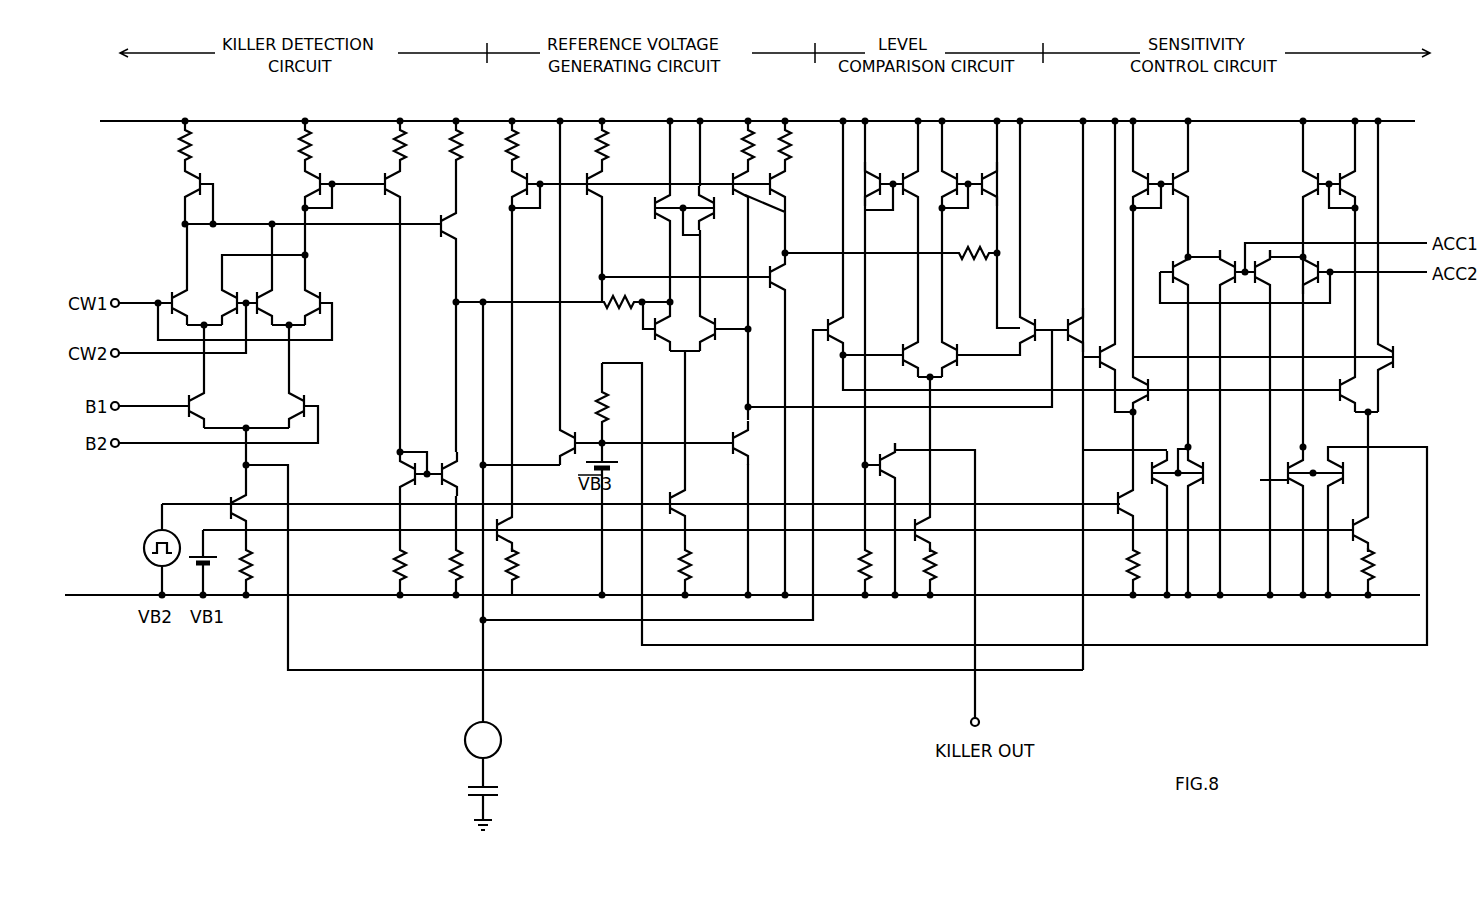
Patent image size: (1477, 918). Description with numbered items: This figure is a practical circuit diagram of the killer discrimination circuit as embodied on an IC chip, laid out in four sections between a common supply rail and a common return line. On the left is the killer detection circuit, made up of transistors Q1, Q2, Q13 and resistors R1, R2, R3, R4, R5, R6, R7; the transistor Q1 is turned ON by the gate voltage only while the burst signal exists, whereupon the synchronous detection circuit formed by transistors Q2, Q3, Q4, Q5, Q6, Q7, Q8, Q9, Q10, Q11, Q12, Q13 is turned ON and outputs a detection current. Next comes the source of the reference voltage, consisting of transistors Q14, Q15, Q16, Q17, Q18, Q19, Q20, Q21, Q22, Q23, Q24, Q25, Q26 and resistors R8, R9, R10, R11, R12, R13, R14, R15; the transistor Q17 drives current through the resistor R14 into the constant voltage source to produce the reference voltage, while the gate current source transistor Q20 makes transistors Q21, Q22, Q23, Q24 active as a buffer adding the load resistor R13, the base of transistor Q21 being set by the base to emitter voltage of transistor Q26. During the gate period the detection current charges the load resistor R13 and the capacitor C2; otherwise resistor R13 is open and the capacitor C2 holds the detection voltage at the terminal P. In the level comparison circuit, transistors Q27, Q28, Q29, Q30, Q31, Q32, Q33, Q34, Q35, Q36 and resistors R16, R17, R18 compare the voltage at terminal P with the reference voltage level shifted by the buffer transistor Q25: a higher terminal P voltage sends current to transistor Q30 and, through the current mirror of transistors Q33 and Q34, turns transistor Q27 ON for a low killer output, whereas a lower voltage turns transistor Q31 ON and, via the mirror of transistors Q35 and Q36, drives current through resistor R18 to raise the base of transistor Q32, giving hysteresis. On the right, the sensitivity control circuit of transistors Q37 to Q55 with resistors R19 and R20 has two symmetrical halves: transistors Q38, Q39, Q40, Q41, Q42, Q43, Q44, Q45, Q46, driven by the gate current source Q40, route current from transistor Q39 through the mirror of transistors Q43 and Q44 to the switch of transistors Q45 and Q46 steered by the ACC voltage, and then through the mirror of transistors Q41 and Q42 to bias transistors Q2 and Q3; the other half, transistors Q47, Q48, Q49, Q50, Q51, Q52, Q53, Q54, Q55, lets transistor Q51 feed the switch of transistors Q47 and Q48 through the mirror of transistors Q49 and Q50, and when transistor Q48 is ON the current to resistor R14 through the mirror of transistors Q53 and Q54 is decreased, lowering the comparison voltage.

The resistor R1 is at (260, 565).
The resistor R2 is at (170, 145).
The resistor R3 is at (289, 145).
The resistor R4 is at (384, 145).
The resistor R5 is at (441, 145).
The resistor R6 is at (384, 565).
The resistor R7 is at (441, 565).
The resistor R8 is at (527, 565).
The resistor R9 is at (525, 145).
The resistor R10 is at (621, 145).
The resistor R11 is at (731, 145).
The resistor R12 is at (804, 145).
The load resistor R13 is at (642, 274).
The resistor R14 is at (585, 397).
The resistor R15 is at (706, 565).
The resistor R16 is at (846, 565).
The resistor R17 is at (949, 565).
The resistor R18 is at (974, 267).
The resistor R19 is at (1112, 565).
The resistor R20 is at (1387, 565).
The transistor Q1 is at (229, 502).
The transistor Q2 is at (188, 398).
The transistor Q3 is at (305, 398).
The transistor Q4 is at (168, 297).
The transistor Q5 is at (230, 297).
The transistor Q6 is at (277, 303).
The transistor Q7 is at (317, 297).
The transistor Q8 is at (175, 184).
The transistor Q9 is at (299, 184).
The transistor Q10 is at (409, 184).
The transistor Q11 is at (465, 226).
The transistor Q12 is at (387, 474).
The transistor Q13 is at (442, 462).
The transistor Q14 is at (523, 530).
The transistor Q15 is at (550, 443).
The transistor Q16 is at (503, 184).
The transistor Q17 is at (613, 186).
The transistor Q18 is at (780, 192).
The transistor Q19 is at (798, 184).
The transistor Q20 is at (697, 503).
The transistor Q21 is at (681, 329).
The transistor Q22 is at (718, 336).
The transistor Q23 is at (651, 218).
The transistor Q24 is at (718, 218).
The transistor Q25 is at (800, 277).
The transistor Q26 is at (761, 443).
The transistor Q27 is at (890, 455).
The transistor Q28 is at (942, 530).
The transistor Q29 is at (824, 319).
The transistor Q30 is at (900, 347).
The transistor Q31 is at (960, 347).
The transistor Q32 is at (1038, 323).
The transistor Q33 is at (884, 176).
The transistor Q34 is at (918, 208).
The transistor Q35 is at (960, 176).
The transistor Q36 is at (1000, 187).
The transistor Q37 is at (1093, 330).
The transistor Q38 is at (1089, 357).
The transistor Q39 is at (1160, 388).
The gate current source Q40 is at (1152, 470).
The transistor Q41 is at (1142, 503).
The transistor Q42 is at (1203, 461).
The transistor Q43 is at (1153, 176).
The transistor Q44 is at (1200, 184).
The transistor Q45 is at (1167, 267).
The transistor Q46 is at (1212, 272).
The transistor Q47 is at (1281, 272).
The transistor Q48 is at (1328, 271).
The transistor Q49 is at (1292, 184).
The transistor Q50 is at (1336, 176).
The transistor Q51 is at (1330, 387).
The transistor Q52 is at (1396, 348).
The transistor Q53 is at (1262, 473).
The transistor Q54 is at (1342, 478).
The transistor Q55 is at (1380, 530).
The capacitor C2 is at (498, 794).
The terminal P is at (500, 732).